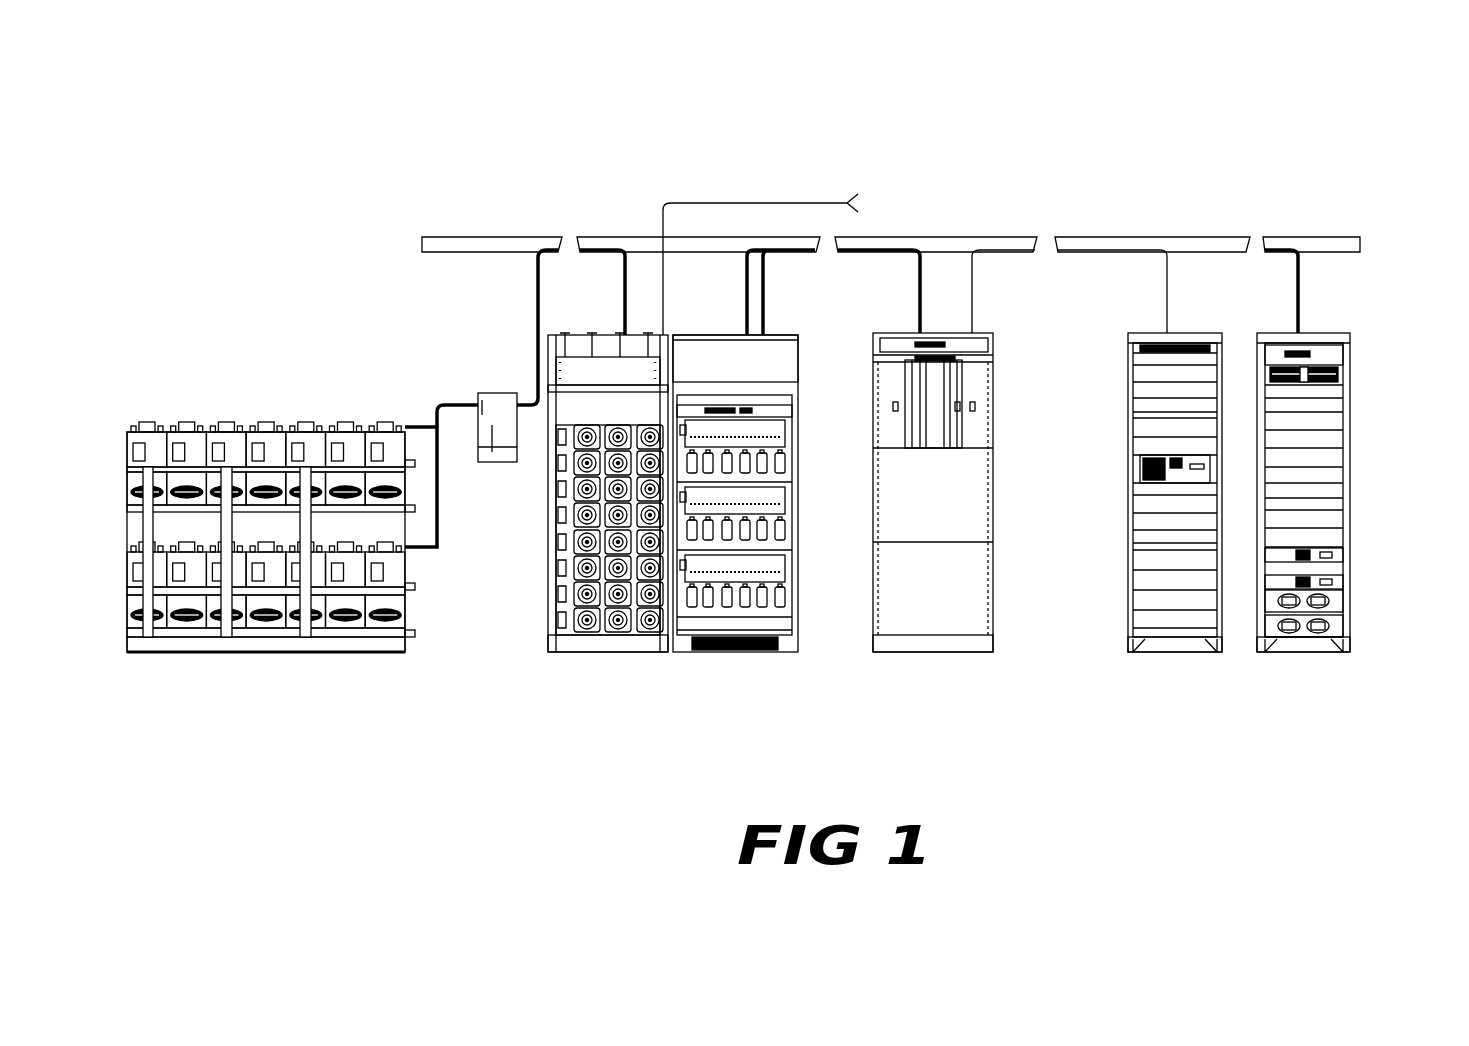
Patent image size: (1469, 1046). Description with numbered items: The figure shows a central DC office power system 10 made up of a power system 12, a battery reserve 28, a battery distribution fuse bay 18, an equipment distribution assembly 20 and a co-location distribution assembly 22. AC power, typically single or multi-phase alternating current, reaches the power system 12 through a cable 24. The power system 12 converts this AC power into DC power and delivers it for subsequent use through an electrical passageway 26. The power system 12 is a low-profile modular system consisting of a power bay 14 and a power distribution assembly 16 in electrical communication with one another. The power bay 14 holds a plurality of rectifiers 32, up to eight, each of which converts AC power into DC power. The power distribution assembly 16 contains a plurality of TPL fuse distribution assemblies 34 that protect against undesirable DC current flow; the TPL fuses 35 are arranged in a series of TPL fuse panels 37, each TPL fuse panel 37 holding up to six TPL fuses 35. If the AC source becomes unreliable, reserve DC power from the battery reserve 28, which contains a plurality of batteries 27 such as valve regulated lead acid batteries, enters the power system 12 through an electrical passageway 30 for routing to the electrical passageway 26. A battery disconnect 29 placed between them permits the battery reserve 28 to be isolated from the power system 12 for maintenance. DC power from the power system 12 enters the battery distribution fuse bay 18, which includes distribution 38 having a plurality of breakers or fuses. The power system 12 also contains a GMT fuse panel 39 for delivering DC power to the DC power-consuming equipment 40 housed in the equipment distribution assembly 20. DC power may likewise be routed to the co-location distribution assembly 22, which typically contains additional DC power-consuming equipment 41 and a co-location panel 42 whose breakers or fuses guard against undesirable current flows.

The central DC office power system 10 is at (572, 178).
The power system 12 is at (677, 531).
The power bay 14 is at (579, 526).
The power distribution assembly 16 is at (768, 532).
The battery distribution fuse bay 18 is at (959, 531).
The equipment distribution assembly 20 is at (1127, 527).
The co-location distribution assembly 22 is at (1352, 539).
The cable 24 is at (723, 203).
The electrical passageway 26 is at (790, 256).
The batteries 27 is at (300, 422).
The battery reserve 28 is at (271, 544).
The battery disconnect 29 is at (498, 462).
The electrical passageway 30 is at (538, 290).
The rectifiers 32 is at (548, 520).
The TPL fuse distribution assemblies 34 is at (812, 422).
The TPL fuses 35 is at (800, 545).
The TPL fuse panel 37 is at (778, 656).
The distribution 38 is at (980, 422).
The GMT fuse panel 39 is at (1125, 353).
The DC power-consuming equipment 40 is at (1125, 463).
The DC power-consuming equipment 41 is at (1356, 548).
The co-location panel 42 is at (1362, 353).